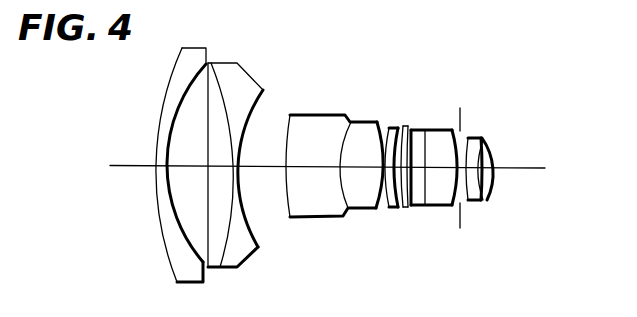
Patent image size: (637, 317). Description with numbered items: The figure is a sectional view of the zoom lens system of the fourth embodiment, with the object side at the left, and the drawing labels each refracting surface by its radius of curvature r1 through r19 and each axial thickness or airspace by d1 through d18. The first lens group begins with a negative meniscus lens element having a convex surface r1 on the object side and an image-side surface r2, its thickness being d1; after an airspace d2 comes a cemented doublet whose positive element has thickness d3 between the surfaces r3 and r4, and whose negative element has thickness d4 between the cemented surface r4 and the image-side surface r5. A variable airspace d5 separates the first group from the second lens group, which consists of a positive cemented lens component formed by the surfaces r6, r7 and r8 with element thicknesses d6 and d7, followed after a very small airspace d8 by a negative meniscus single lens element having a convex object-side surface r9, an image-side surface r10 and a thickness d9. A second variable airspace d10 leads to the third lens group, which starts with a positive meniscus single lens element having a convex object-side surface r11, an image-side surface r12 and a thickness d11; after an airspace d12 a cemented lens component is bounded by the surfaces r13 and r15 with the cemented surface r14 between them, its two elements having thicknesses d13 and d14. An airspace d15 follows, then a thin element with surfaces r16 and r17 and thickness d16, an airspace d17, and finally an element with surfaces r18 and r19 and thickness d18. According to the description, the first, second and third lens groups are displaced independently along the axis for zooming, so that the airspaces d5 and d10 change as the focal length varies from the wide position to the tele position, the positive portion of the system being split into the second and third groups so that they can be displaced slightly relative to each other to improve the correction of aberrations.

The radius of curvature of first surface r1 is at (170, 265).
The radius of curvature of second surface r2 is at (200, 259).
The radius of curvature of third surface r3 is at (207, 268).
The radius of curvature of fourth surface r4 is at (224, 262).
The radius of curvature of fifth surface r5 is at (260, 247).
The radius of curvature of sixth surface r6 is at (290, 220).
The radius of curvature of seventh surface r7 is at (343, 216).
The radius of curvature of eighth surface r8 is at (370, 210).
The radius of curvature of ninth surface r9 is at (386, 209).
The radius of curvature of tenth surface r10 is at (396, 208).
The radius of curvature of eleventh surface r11 is at (403, 210).
The radius of curvature of twelfth surface r12 is at (407, 209).
The radius of curvature of thirteenth surface r13 is at (413, 207).
The radius of curvature of fourteenth surface r14 is at (426, 207).
The radius of curvature of fifteenth surface r15 is at (451, 207).
The radius of curvature of sixteenth surface r16 is at (469, 202).
The radius of curvature of seventeenth surface r17 is at (482, 201).
The radius of curvature of eighteenth surface r18 is at (488, 200).
The radius of curvature of nineteenth surface r19 is at (495, 180).
The thickness of first lens element d1 is at (157, 151).
The airspace between first and second lens elements d2 is at (190, 165).
The thickness of second lens element d3 is at (222, 164).
The thickness of third lens element d4 is at (243, 151).
The variable airspace between first and second lens groups d5 is at (268, 166).
The thickness of fourth lens element d6 is at (313, 166).
The thickness of fifth lens element d7 is at (357, 166).
The airspace between cemented component and meniscus element d8 is at (388, 128).
The thickness of sixth lens element d9 is at (393, 128).
The variable airspace between second and third lens groups d10 is at (405, 127).
The thickness of seventh lens element d11 is at (412, 130).
The airspace between meniscus element and cemented component d12 is at (418, 128).
The thickness of eighth lens element d13 is at (437, 130).
The thickness of ninth lens element d14 is at (441, 167).
The airspace after cemented component d15 is at (463, 133).
The thickness of tenth lens element d16 is at (475, 137).
The airspace before final lens element d17 is at (491, 137).
The thickness of eleventh lens element d18 is at (493, 162).